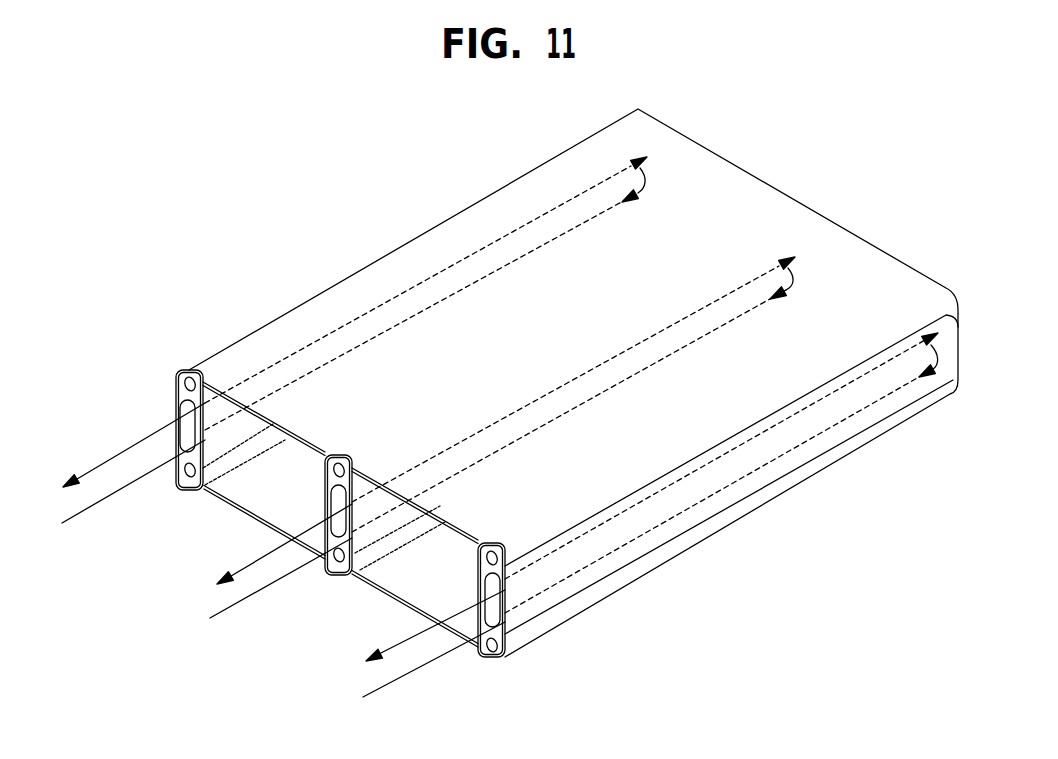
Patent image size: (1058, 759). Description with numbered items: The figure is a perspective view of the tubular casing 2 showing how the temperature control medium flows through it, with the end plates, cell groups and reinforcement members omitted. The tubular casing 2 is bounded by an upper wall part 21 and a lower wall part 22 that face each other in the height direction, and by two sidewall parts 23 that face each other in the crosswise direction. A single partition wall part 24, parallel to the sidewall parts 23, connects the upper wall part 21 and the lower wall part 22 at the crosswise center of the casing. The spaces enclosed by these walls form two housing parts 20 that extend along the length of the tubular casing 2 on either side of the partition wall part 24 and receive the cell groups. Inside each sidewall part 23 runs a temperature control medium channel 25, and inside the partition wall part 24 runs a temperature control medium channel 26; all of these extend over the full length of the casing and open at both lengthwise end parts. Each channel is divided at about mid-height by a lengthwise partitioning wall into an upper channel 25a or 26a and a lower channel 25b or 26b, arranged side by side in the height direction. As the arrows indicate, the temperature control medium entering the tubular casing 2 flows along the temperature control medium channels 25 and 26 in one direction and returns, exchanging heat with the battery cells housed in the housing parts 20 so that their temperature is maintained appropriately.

The tubular casing 2 is at (450, 188).
The upper wall part 21 is at (745, 192).
The lower wall part 22 is at (262, 530).
The housing part 20 is at (258, 497).
The sidewall part 23 is at (177, 405).
The partition wall part 24 is at (378, 505).
The temperature control medium channel 25 is at (146, 422).
The upper channel 25a is at (178, 420).
The lower channel 25b is at (182, 473).
The temperature control medium channel 26 is at (296, 580).
The upper channel 26a is at (338, 503).
The lower channel 26b is at (338, 562).